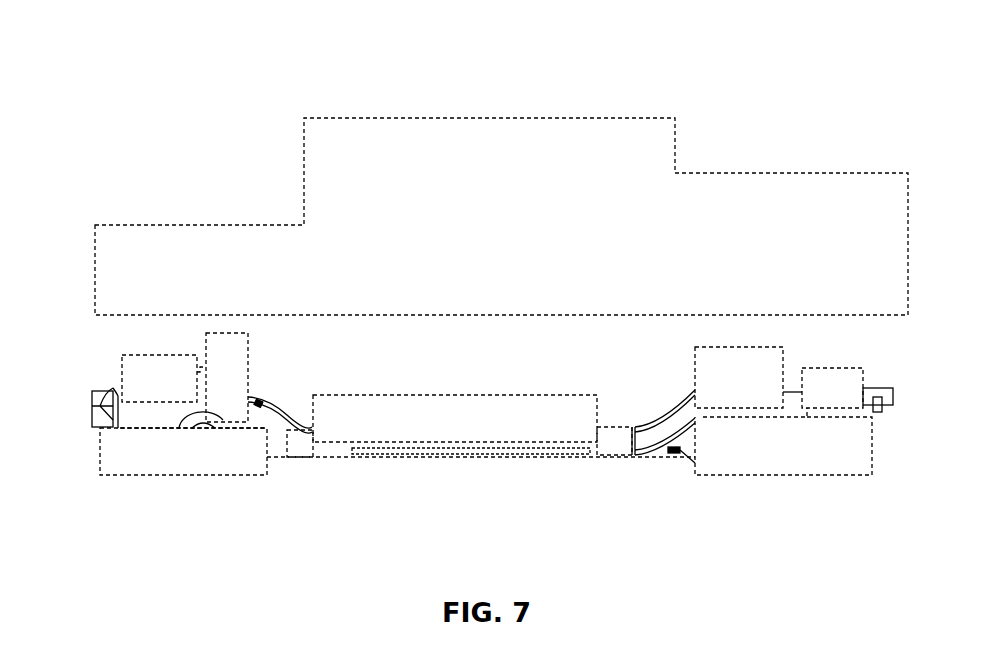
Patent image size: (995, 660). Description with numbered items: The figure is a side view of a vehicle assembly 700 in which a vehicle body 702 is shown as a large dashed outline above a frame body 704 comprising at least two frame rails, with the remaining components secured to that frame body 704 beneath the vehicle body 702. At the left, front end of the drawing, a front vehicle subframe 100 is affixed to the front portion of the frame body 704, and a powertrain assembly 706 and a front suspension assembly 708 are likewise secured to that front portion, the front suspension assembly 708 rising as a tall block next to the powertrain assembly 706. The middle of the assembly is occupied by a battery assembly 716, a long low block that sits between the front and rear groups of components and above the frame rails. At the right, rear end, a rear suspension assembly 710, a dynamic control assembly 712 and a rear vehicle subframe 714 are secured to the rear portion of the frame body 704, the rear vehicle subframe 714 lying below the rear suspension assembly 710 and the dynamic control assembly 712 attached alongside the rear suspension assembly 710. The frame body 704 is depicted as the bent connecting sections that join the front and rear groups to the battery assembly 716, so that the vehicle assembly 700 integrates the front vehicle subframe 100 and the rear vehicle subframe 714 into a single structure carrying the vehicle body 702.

The vehicle assembly 700 is at (140, 55).
The vehicle body 702 is at (522, 229).
The front vehicle subframe 100 is at (170, 448).
The frame body 704 is at (282, 445).
The powertrain assembly 706 is at (148, 377).
The front suspension assembly 708 is at (227, 347).
The rear suspension assembly 710 is at (720, 377).
The dynamic control assembly 712 is at (840, 378).
The rear vehicle subframe 714 is at (737, 447).
The battery assembly 716 is at (450, 417).